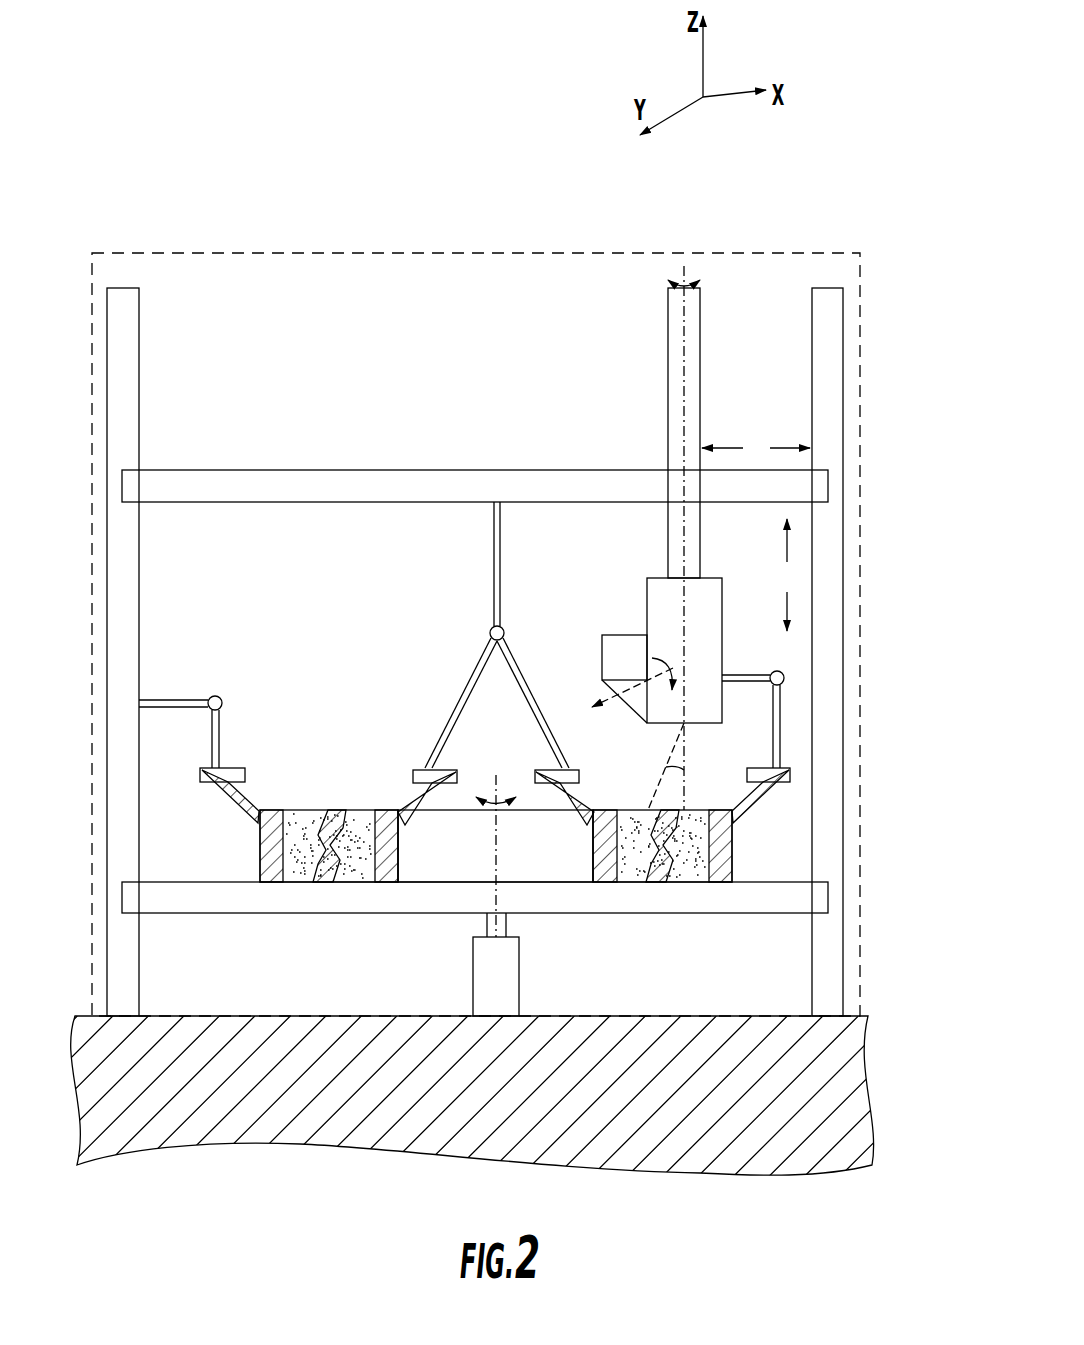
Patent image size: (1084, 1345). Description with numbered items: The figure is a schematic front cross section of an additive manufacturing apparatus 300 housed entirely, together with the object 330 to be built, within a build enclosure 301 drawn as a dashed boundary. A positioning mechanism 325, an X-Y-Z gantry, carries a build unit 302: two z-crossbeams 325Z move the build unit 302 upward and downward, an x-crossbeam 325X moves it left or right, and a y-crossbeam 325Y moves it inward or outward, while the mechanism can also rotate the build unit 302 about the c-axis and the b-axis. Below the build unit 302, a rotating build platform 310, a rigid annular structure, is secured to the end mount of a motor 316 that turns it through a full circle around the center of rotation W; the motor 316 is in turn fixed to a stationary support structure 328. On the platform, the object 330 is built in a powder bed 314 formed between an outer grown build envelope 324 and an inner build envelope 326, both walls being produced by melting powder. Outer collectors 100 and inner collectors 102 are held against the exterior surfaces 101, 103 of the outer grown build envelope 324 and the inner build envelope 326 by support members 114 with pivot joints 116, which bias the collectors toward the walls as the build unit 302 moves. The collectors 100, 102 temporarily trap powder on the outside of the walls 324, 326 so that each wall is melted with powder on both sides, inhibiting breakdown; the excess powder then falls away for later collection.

The additive manufacturing apparatus 300 is at (490, 232).
The build enclosure 301 is at (160, 250).
The positioning mechanism 325 is at (828, 283).
The z-crossbeam 325Z is at (121, 378).
The y-crossbeam 325Y is at (668, 330).
The x-crossbeam 325X is at (828, 487).
The build unit 302 is at (660, 603).
The support member 114 is at (175, 700).
The pivot joint 116 is at (220, 698).
The outer collector 100 is at (205, 782).
The inner collector 102 is at (420, 768).
The exterior surface of the outer grown build envelope 101 is at (258, 871).
The outer grown build envelope 324 is at (265, 842).
The inner build envelope 326 is at (398, 853).
The exterior surface of the inner build envelope 103 is at (400, 872).
The object 330 is at (325, 805).
The powder bed 314 is at (354, 876).
The rotating build platform 310 is at (760, 905).
The motor 316 is at (500, 993).
The stationary support structure 328 is at (838, 1085).